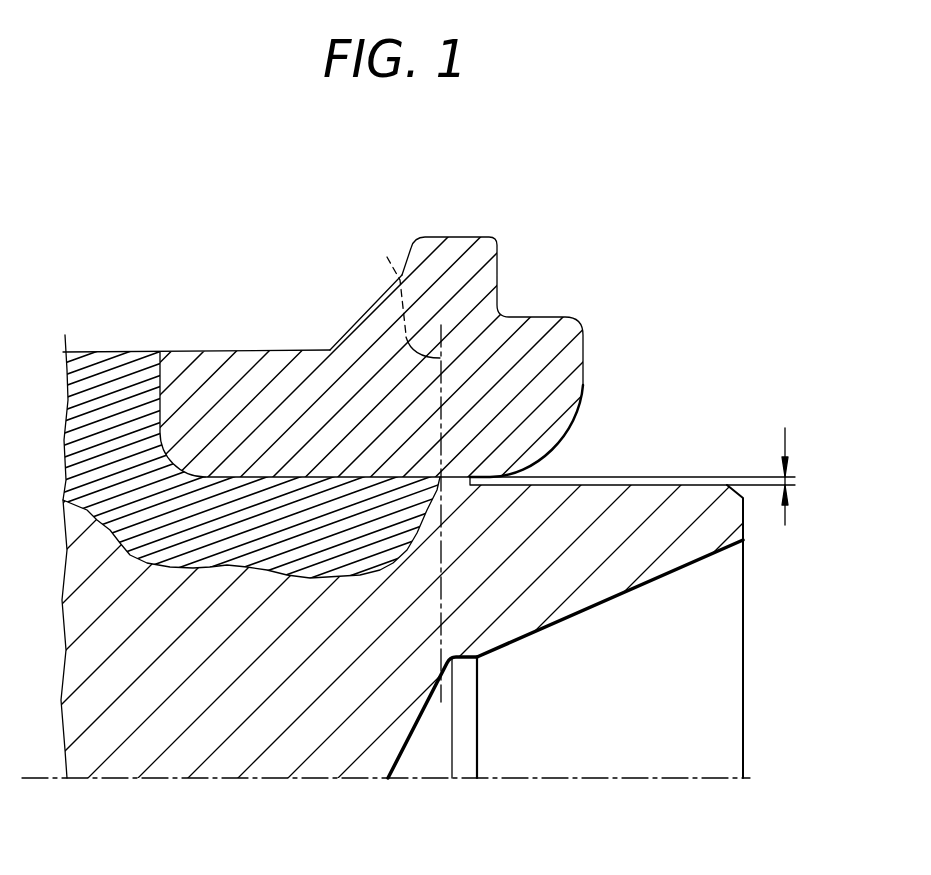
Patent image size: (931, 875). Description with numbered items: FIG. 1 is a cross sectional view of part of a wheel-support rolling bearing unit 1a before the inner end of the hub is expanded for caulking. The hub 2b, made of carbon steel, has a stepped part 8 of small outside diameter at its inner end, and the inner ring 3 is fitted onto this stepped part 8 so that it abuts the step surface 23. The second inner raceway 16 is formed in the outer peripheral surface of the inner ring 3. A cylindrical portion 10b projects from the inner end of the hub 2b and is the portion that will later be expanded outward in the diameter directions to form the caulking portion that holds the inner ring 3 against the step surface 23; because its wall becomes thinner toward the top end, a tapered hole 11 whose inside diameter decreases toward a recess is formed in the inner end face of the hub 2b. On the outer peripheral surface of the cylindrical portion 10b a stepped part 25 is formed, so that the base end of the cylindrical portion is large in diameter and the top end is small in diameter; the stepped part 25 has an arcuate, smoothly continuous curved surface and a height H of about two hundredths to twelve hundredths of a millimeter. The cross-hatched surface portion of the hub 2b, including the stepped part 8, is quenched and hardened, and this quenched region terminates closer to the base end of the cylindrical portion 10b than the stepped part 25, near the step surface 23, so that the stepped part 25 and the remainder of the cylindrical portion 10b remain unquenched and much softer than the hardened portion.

The wheel-support rolling bearing unit 1a is at (521, 250).
The inner ring 3 is at (575, 344).
The second inner raceway 16 is at (340, 344).
The step surface 23 is at (163, 366).
The stepped part 25 is at (537, 433).
The stepped part 8 is at (293, 477).
The hub 2b is at (349, 705).
The cylindrical portion 10b is at (698, 538).
The tapered hole 11 is at (590, 607).
The height of the stepped part H is at (786, 440).